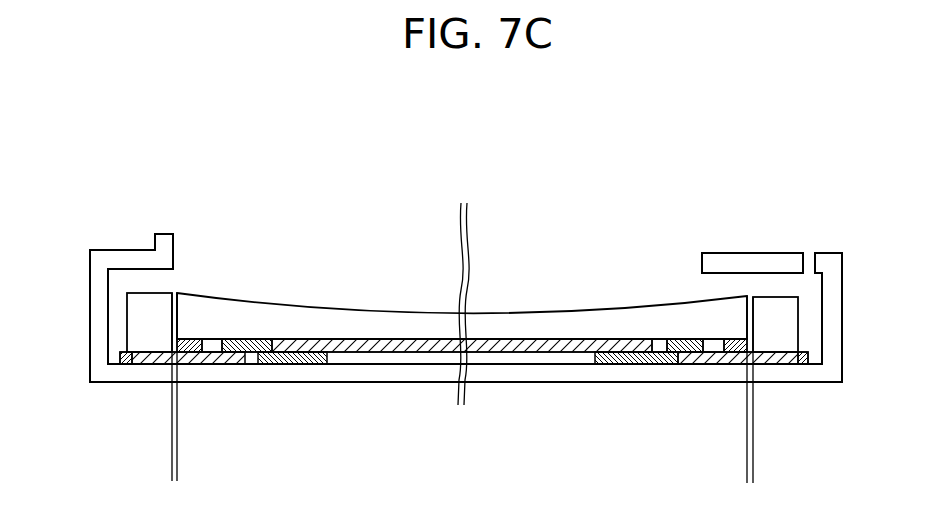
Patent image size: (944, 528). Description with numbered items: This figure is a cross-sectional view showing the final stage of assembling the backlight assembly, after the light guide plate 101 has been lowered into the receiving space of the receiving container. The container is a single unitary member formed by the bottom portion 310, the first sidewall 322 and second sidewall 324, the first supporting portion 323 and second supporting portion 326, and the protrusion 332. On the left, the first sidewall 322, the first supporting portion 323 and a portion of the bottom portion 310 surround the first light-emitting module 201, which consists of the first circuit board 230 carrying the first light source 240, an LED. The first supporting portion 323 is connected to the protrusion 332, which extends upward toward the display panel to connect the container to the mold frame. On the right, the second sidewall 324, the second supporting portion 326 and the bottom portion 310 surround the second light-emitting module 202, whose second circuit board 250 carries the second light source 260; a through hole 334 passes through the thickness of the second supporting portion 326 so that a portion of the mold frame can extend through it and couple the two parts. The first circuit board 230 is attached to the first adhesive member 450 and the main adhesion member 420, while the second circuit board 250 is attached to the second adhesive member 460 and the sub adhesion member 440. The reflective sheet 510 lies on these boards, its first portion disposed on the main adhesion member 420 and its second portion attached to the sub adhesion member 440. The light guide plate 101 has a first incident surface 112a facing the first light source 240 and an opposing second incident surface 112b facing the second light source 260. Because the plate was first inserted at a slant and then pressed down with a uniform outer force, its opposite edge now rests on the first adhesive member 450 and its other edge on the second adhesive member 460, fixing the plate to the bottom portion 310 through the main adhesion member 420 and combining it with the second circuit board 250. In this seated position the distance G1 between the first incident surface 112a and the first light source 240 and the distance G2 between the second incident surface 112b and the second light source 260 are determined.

The light guide plate 101 is at (325, 320).
The first incident surface 112a is at (175, 312).
The second incident surface 112b is at (750, 312).
The first light-emitting module 201 is at (127, 385).
The second light-emitting module 202 is at (802, 387).
The first circuit board 230 is at (132, 356).
The first light source 240 is at (148, 335).
The second circuit board 250 is at (790, 335).
The second light source 260 is at (800, 362).
The bottom portion 310 is at (380, 373).
The first sidewall 322 is at (97, 302).
The first supporting portion 323 is at (118, 260).
The second sidewall 324 is at (833, 292).
The second supporting portion 326 is at (770, 258).
The protrusion 332 is at (157, 242).
The through hole 334 is at (808, 275).
The main adhesion member 420 is at (297, 362).
The sub adhesion member 440 is at (628, 365).
The first adhesive member 450 is at (187, 338).
The second adhesive member 460 is at (735, 358).
The reflective sheet 510 is at (527, 353).
The distance between first incident surface and first light source G1 is at (143, 478).
The distance between second incident surface and second light source G2 is at (778, 479).